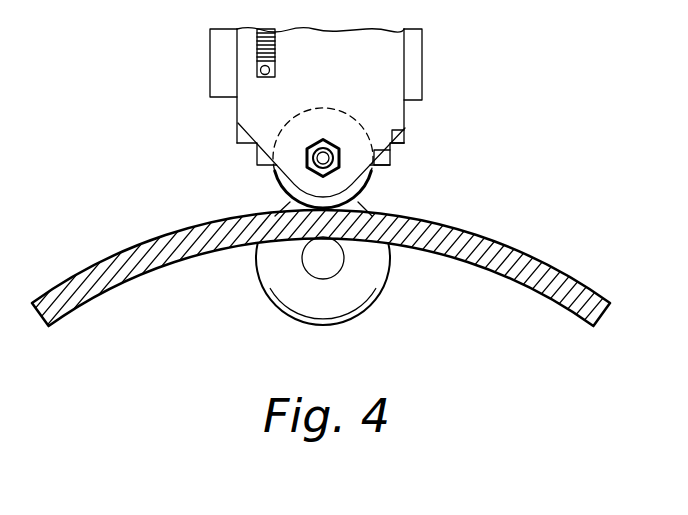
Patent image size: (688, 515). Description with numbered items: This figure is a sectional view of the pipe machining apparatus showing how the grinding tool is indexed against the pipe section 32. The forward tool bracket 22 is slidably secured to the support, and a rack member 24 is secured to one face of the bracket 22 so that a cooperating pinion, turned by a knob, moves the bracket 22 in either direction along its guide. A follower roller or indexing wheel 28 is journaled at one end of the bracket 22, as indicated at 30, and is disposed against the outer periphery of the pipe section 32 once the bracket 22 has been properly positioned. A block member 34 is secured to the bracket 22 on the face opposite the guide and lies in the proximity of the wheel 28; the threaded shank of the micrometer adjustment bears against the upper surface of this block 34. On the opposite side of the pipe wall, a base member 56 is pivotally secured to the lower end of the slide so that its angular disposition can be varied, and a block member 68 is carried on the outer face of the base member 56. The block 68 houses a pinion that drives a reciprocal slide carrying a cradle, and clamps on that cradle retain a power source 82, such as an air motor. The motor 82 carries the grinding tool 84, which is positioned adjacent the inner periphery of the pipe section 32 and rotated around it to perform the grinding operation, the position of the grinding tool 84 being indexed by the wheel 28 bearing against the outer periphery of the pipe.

The tool bracket 22 is at (383, 78).
The rack member 24 is at (276, 47).
The follower roller 28 is at (350, 190).
The journal 30 is at (316, 161).
The pipe section 32 is at (530, 258).
The block member 34 is at (413, 47).
The base member 56 is at (405, 135).
The block member 68 is at (392, 155).
The power source 82 is at (300, 292).
The grinding tool 84 is at (313, 259).